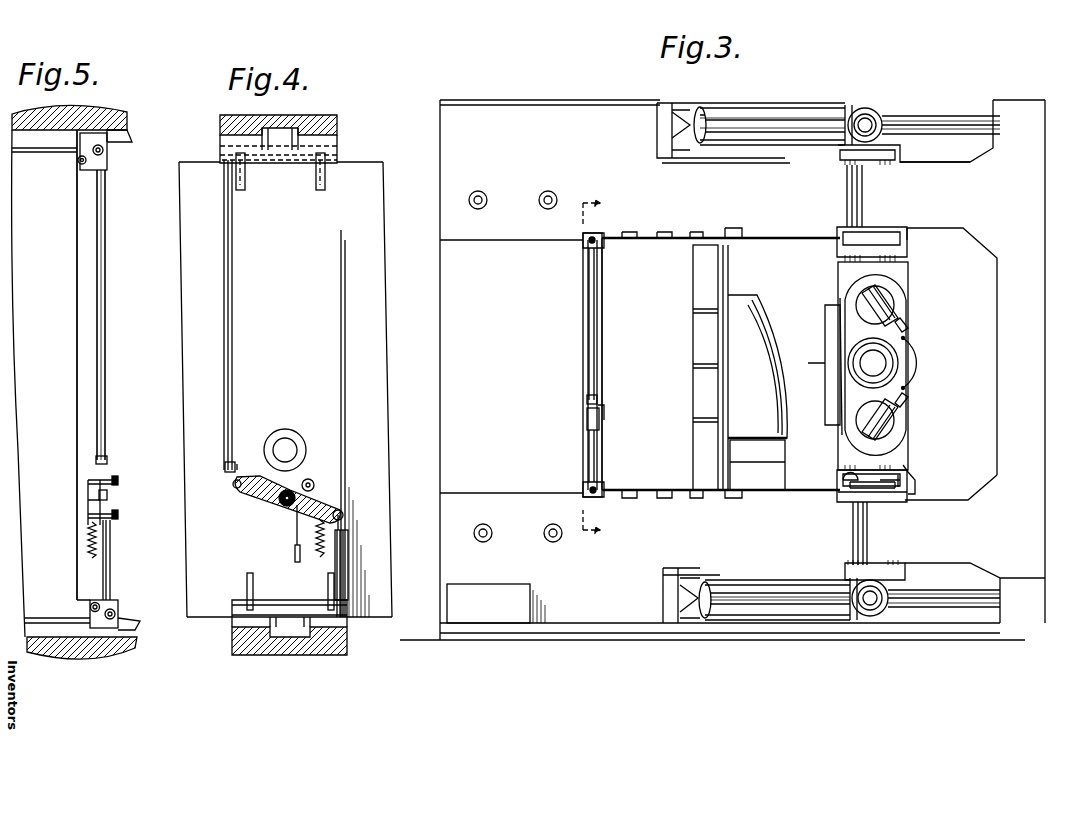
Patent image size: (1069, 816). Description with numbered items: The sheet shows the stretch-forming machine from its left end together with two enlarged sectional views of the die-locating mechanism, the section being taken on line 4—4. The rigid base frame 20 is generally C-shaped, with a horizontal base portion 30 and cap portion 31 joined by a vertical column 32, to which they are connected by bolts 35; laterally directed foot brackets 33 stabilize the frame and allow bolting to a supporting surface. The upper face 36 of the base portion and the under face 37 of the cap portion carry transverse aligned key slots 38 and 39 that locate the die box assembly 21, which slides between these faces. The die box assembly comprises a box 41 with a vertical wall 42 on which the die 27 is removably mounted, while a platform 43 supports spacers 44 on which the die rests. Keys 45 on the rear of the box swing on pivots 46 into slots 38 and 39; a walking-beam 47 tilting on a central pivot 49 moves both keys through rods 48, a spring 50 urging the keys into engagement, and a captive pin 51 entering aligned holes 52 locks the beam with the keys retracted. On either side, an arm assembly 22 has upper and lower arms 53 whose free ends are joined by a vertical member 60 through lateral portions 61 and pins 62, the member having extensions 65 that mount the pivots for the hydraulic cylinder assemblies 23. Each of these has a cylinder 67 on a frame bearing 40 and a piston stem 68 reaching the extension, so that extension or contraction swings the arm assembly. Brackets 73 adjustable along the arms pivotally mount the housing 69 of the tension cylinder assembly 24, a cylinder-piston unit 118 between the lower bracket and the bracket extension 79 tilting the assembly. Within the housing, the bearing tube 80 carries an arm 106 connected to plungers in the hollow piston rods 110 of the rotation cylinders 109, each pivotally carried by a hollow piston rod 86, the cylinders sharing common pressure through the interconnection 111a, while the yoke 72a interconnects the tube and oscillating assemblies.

In FIG. 3, the base frame 20 is at (562, 100).
In FIG. 5, the die box assembly 21 is at (92, 303).
In FIG. 4, the die box assembly 21 is at (387, 260).
In FIG. 3, the die box assembly 21 is at (735, 262).
In FIG. 3, the arm assembly 22 is at (995, 280).
In FIG. 3, the hydraulic cylinder assembly 23 is at (872, 108).
In FIG. 3, the tension cylinder assembly 24 is at (912, 270).
In FIG. 3, the die 27 is at (765, 350).
In FIG. 5, the base portion 30 is at (92, 655).
In FIG. 4, the base portion 30 is at (330, 652).
In FIG. 3, the base portion 30 is at (623, 625).
In FIG. 5, the cap portion 31 is at (30, 110).
In FIG. 4, the cap portion 31 is at (325, 116).
In FIG. 3, the cap portion 31 is at (604, 105).
In FIG. 3, the vertical column 32 is at (445, 370).
In FIG. 3, the foot bracket 33 is at (890, 635).
In FIG. 3, the bolts 35 is at (538, 198).
In FIG. 3, the upper face 36 is at (773, 492).
In FIG. 3, the under face 37 is at (793, 240).
In FIG. 3, the key slots 38 is at (668, 498).
In FIG. 3, the key slots 39 is at (690, 232).
In FIG. 3, the bearings 40 is at (720, 152).
In FIG. 5, the box 41 is at (70, 415).
In FIG. 4, the box 41 is at (328, 355).
In FIG. 3, the box 41 is at (613, 348).
In FIG. 4, the vertical wall 42 is at (372, 318).
In FIG. 3, the vertical wall 42 is at (728, 282).
In FIG. 3, the platform 43 is at (770, 485).
In FIG. 3, the spacers 44 is at (770, 465).
In FIG. 5, the keys 45 is at (108, 140).
In FIG. 4, the keys 45 is at (338, 158).
In FIG. 3, the keys 45 is at (600, 234).
In FIG. 5, the pivots 46 is at (77, 162).
In FIG. 4, the pivots 46 is at (292, 160).
In FIG. 5, the walking-beam 47 is at (107, 506).
In FIG. 4, the walking-beam 47 is at (272, 503).
In FIG. 3, the walking-beam 47 is at (603, 433).
In FIG. 5, the rods 48 is at (106, 352).
In FIG. 4, the rods 48 is at (234, 326).
In FIG. 3, the rods 48 is at (588, 283).
In FIG. 4, the central pivot 49 is at (283, 490).
In FIG. 5, the spring 50 is at (88, 545).
In FIG. 4, the spring 50 is at (316, 555).
In FIG. 4, the captive pin 51 is at (294, 555).
In FIG. 4, the holes 52 is at (312, 483).
In FIG. 3, the arms 53 is at (850, 232).
In FIG. 3, the vertical member 60 is at (999, 388).
In FIG. 3, the lateral portions 61 is at (932, 168).
In FIG. 3, the pins 62 is at (850, 560).
In FIG. 3, the extensions 65 is at (1012, 108).
In FIG. 3, the cylinder 67 is at (792, 120).
In FIG. 3, the stem 68 is at (958, 116).
In FIG. 3, the housing 69 is at (843, 275).
In FIG. 3, the yoke 72a is at (850, 390).
In FIG. 3, the brackets 73 is at (912, 238).
In FIG. 3, the bracket extension 79 is at (915, 478).
In FIG. 3, the bearing tube 80 is at (853, 372).
In FIG. 3, the hollow piston rod 86 is at (856, 292).
In FIG. 3, the arm 106 is at (910, 363).
In FIG. 3, the cylinder 109 is at (900, 315).
In FIG. 3, the hollow piston rod 110 is at (905, 332).
In FIG. 3, the interconnection 111a is at (825, 321).
In FIG. 3, the cylinder-piston unit 118 is at (870, 490).
In FIG. 3, the section line 4— 4 is at (586, 367).